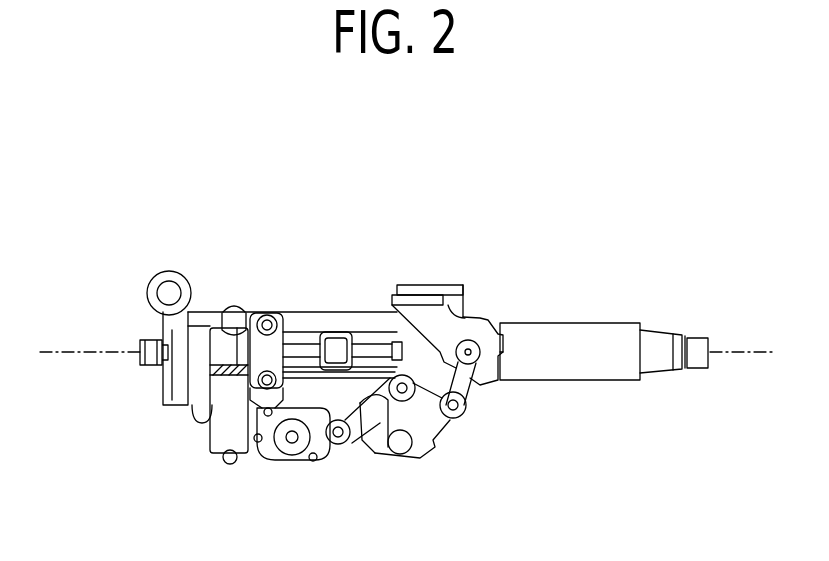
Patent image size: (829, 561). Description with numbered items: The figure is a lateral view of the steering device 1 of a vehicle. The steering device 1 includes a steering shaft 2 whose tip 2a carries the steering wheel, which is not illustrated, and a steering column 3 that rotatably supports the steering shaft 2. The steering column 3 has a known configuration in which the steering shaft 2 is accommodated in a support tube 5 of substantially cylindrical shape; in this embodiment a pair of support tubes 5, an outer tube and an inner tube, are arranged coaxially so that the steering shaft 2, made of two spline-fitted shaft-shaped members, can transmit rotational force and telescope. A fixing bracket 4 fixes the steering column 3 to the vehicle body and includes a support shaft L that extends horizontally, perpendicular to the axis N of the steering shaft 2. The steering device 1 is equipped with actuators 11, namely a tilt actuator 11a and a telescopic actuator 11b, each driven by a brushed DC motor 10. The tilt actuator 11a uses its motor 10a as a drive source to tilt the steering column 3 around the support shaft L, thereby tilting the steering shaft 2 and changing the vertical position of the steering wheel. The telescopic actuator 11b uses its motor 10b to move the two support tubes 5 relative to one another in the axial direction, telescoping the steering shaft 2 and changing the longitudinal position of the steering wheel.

The steering device 1 is at (95, 207).
The steering shaft 2 is at (685, 328).
The tip 2a is at (700, 337).
The steering column 3 is at (552, 322).
The fixing bracket 4 is at (440, 285).
The support tube 5 is at (535, 372).
The motor 10 is at (280, 434).
The motor 10a is at (280, 457).
The motor 10b is at (212, 460).
The actuators 11 is at (354, 375).
The tilt actuator 11a is at (562, 516).
The telescopic actuator 11b is at (285, 312).
The support shaft L is at (468, 318).
The axis N is at (748, 352).